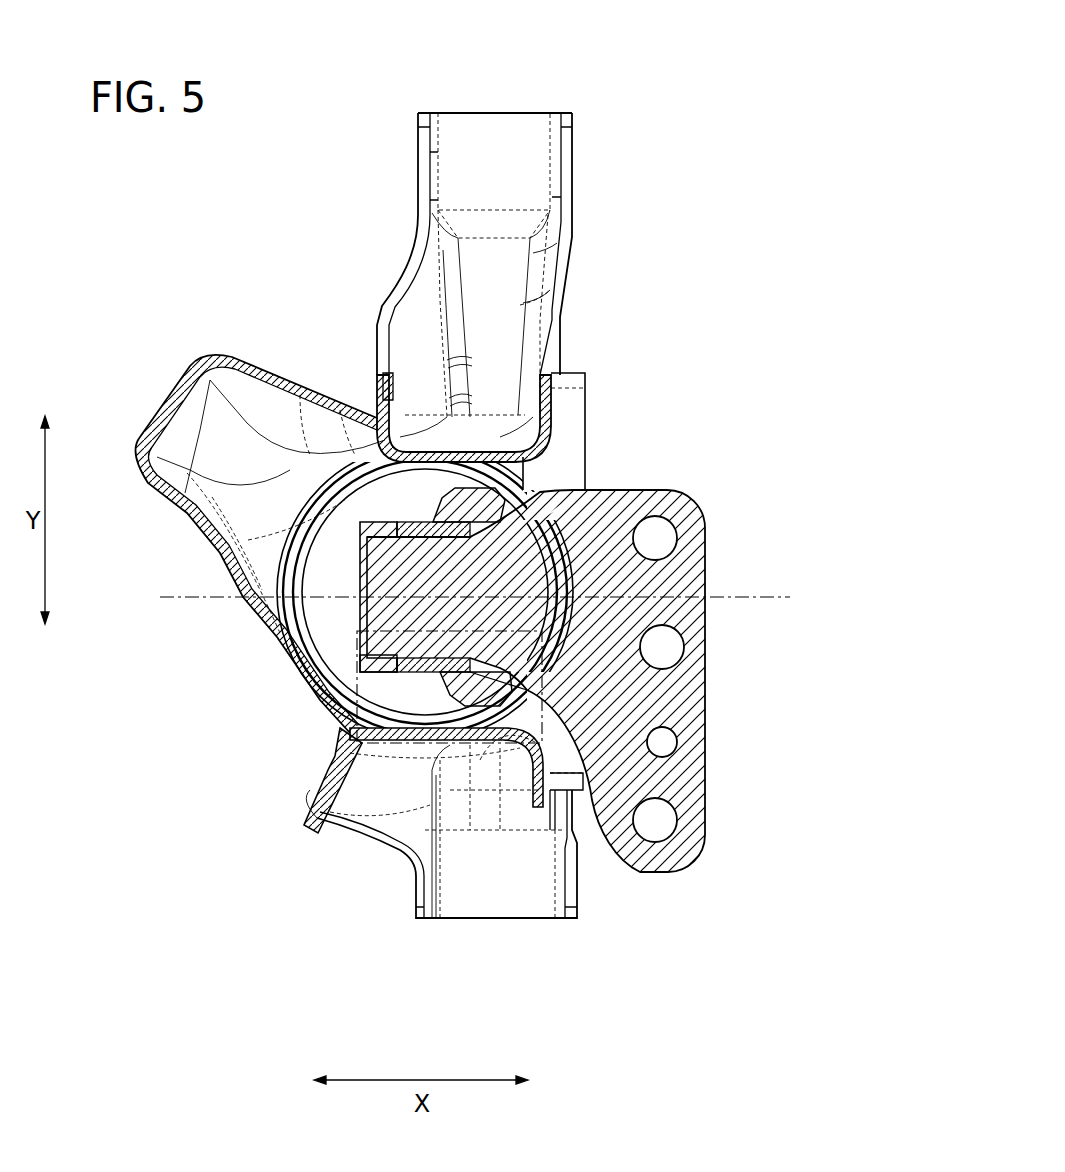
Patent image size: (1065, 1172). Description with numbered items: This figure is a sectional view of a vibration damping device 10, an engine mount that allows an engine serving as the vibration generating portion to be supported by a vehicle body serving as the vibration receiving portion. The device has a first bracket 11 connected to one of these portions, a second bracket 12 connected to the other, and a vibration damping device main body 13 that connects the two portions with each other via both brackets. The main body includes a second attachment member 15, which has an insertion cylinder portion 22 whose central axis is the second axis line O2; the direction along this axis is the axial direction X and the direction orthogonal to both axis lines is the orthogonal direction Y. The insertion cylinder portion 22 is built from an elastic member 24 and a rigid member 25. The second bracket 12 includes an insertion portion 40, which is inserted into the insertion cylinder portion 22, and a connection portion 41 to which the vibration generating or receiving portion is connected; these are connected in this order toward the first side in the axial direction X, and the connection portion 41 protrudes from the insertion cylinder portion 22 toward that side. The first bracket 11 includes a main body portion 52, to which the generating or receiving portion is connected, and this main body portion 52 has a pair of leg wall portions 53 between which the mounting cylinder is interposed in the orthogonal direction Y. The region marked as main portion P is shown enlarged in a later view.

The vibration damping device 10 is at (683, 108).
The first bracket 11 is at (303, 820).
The second bracket 12 is at (532, 619).
The vibration damping device main body 13 is at (357, 664).
The second attachment member 15 is at (528, 691).
The insertion cylinder portion 22 is at (400, 499).
The elastic member 24 is at (430, 500).
The rigid member 25 is at (405, 522).
The insertion portion 40 is at (507, 512).
The connection portion 41 is at (612, 414).
The main body portion 52 is at (447, 920).
The leg wall portions 53 is at (384, 398).
The main portion P is at (352, 692).
The second axis line O2 is at (762, 597).